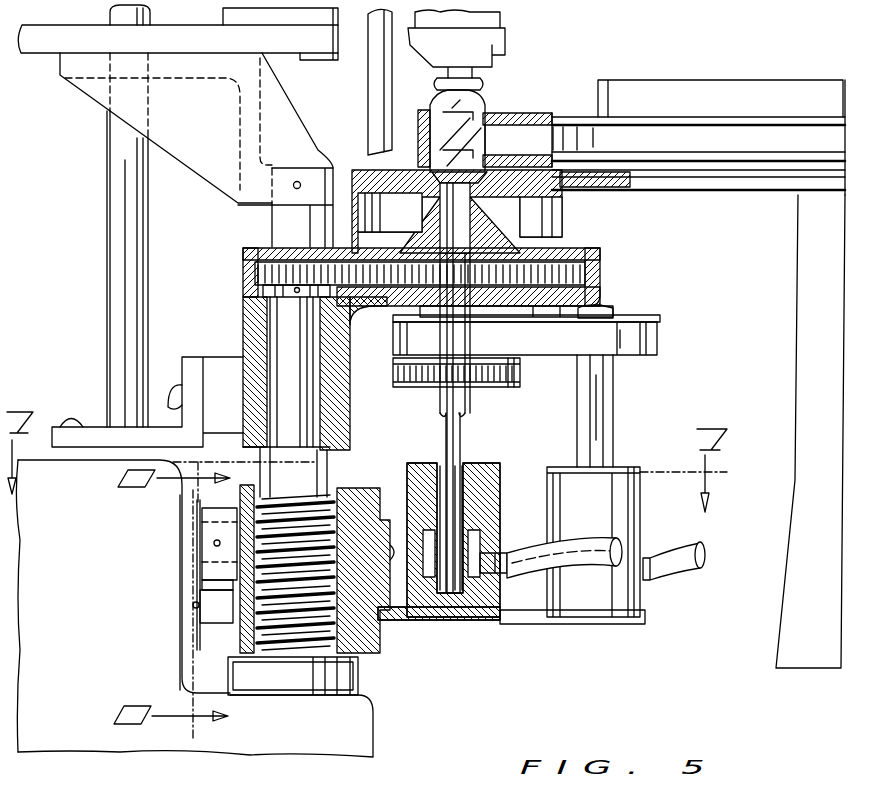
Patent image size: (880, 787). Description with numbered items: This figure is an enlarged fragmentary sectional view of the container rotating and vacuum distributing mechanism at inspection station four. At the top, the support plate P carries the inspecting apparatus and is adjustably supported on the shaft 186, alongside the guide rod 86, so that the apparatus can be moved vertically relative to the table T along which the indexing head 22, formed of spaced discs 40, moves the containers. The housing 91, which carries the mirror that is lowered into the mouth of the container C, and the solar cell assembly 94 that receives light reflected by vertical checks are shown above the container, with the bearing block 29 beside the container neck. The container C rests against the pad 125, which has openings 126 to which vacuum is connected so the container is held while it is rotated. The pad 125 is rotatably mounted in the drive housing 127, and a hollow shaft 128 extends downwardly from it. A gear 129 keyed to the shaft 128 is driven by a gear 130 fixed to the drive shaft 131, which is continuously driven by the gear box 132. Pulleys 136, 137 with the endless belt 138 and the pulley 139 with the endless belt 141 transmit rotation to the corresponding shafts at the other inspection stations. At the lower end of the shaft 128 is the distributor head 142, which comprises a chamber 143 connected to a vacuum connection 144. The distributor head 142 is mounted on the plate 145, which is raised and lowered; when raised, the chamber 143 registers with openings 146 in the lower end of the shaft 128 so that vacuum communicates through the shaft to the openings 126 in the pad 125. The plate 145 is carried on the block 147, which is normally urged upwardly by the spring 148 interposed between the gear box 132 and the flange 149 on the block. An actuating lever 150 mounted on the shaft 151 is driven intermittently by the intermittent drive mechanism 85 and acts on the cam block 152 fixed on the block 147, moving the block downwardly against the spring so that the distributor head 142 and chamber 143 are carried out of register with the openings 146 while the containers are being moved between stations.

The support plate P is at (38, 44).
The guide rod 86 is at (118, 211).
The shaft 186 is at (277, 225).
The solar cell assembly 94 is at (350, 98).
The housing 91 is at (503, 18).
The container C is at (472, 108).
The bearing block 29 is at (420, 126).
The openings 126 is at (517, 140).
The indexing head 22 is at (587, 102).
The spaced discs 40 is at (752, 73).
The table T is at (712, 186).
The pad 125 is at (566, 218).
The drive housing 127 is at (602, 263).
The gear 129 is at (600, 284).
The gear 130 is at (277, 268).
The drive shaft 131 is at (290, 320).
The pulley 136 is at (393, 315).
The pulley 137 is at (660, 320).
The endless belt 138 is at (643, 338).
The pulley 139 is at (418, 388).
The endless belt 141 is at (516, 378).
The hollow shaft 128 is at (472, 407).
The intermittent drive mechanism 85 is at (37, 470).
The gear box 132 is at (350, 733).
The shaft 151 is at (202, 541).
The actuating lever 150 is at (214, 572).
The cam block 152 is at (214, 613).
The flange 149 is at (338, 485).
The block 147 is at (365, 646).
The spring 148 is at (365, 655).
The distributor head 142 is at (483, 483).
The openings 146 is at (466, 520).
The chamber 143 is at (470, 540).
The vacuum connection 144 is at (696, 544).
The plate 145 is at (585, 620).